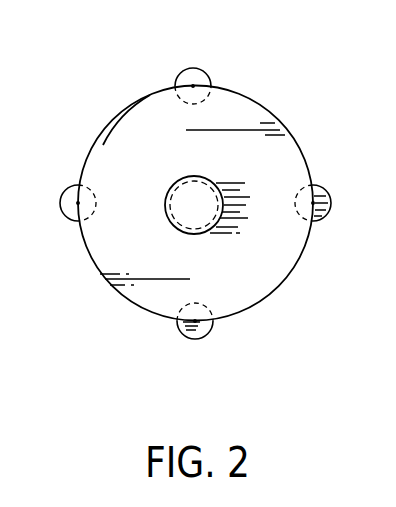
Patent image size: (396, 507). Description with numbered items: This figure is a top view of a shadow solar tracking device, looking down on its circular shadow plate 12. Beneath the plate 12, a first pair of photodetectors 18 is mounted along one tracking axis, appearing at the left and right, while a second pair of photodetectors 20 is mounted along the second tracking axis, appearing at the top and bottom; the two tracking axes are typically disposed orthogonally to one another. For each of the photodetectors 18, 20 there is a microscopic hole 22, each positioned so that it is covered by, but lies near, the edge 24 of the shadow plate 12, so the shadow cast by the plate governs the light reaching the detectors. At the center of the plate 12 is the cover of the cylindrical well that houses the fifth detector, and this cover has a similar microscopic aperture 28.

The shadow plate 12 is at (257, 114).
The first pair of photodetectors 18 is at (72, 193).
The second pair of photodetectors 20 is at (208, 72).
The microscopic hole 22 is at (193, 86).
The edge 24 is at (103, 121).
The microscopic aperture 28 is at (194, 205).